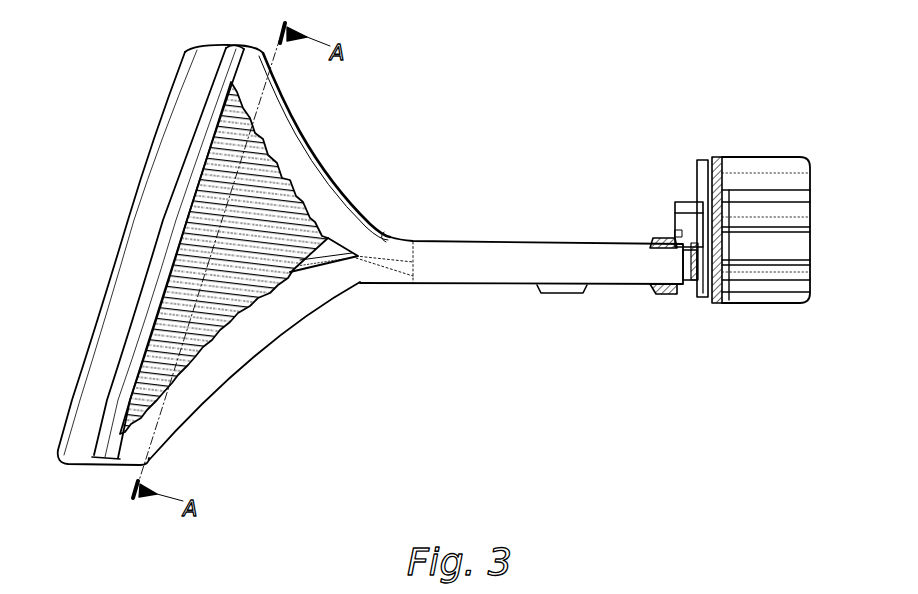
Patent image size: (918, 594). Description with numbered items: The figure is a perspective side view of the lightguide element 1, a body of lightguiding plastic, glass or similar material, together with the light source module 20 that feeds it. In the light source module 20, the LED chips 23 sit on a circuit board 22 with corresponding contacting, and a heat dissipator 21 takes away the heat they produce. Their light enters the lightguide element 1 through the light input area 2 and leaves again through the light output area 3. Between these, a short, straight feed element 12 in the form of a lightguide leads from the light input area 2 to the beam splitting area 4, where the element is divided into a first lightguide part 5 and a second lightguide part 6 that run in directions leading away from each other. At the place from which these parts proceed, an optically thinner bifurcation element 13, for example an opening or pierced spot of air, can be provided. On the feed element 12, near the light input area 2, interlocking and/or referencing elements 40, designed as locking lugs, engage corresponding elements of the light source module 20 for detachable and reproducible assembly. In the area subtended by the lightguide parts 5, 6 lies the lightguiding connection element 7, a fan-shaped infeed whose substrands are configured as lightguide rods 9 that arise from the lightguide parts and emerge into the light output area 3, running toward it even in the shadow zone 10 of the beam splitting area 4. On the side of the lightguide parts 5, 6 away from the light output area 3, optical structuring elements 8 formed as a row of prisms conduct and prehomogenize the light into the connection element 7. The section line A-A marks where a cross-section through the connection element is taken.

The lightguide element 1 is at (580, 57).
The light input area 2 is at (682, 298).
The light output area 3 is at (108, 218).
The beam splitting area 4 is at (399, 293).
The first lightguide part 5 is at (296, 152).
The second lightguide part 6 is at (215, 367).
The lightguiding connection element 7 is at (235, 298).
The optical structuring elements 8 is at (322, 167).
The lightguide rods 9 is at (160, 307).
The shadow zone 10 is at (284, 256).
The feed element 12 is at (472, 252).
The bifurcation element 13 is at (345, 265).
The light source module 20 is at (790, 328).
The heat dissipator 21 is at (764, 163).
The circuit board 22 is at (703, 203).
The LED chips 23 is at (694, 283).
The interlocking and/or referencing elements 40 is at (657, 236).